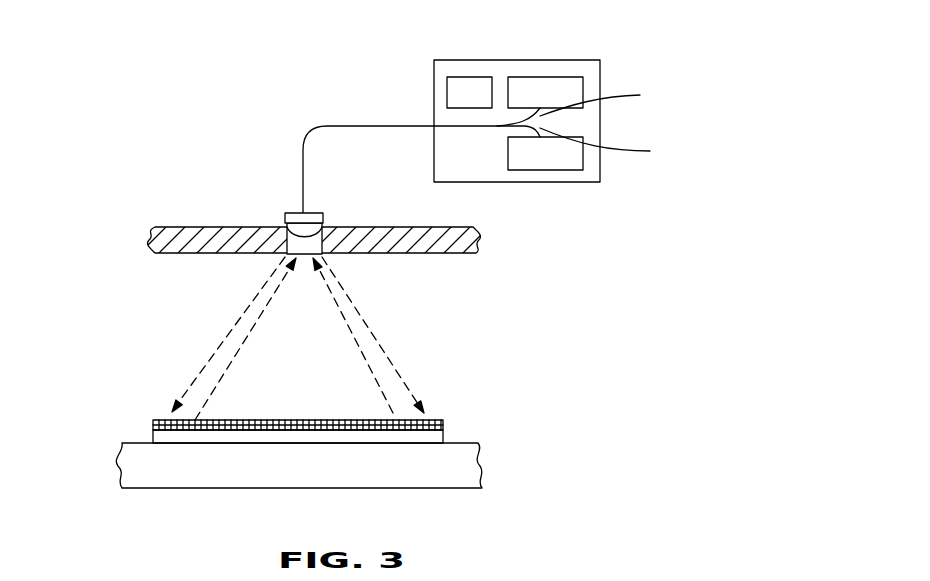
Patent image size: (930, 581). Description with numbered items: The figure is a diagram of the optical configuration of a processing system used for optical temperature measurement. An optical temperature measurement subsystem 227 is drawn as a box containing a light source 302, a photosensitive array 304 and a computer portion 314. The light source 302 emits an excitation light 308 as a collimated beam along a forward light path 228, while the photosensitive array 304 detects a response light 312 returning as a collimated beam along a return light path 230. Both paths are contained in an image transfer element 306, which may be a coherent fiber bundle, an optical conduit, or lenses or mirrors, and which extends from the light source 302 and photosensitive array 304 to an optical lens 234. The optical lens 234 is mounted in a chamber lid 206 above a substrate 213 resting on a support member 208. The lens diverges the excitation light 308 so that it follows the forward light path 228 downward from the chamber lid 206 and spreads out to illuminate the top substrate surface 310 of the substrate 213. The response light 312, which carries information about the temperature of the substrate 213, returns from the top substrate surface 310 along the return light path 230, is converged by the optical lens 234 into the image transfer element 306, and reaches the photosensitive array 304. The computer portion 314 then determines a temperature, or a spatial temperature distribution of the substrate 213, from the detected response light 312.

The optical temperature measurement subsystem 227 is at (525, 60).
The computer portion 314 is at (453, 103).
The photosensitive array 304 is at (529, 103).
The light source 302 is at (529, 164).
The return light path 230 is at (607, 98).
The forward light path 228 is at (612, 144).
The image transfer element 306 is at (327, 124).
The optical lens 234 is at (286, 237).
The chamber lid 206 is at (180, 227).
The excitation light 308 is at (217, 357).
The response light 312 is at (256, 322).
The substrate 213 is at (443, 437).
The top substrate surface 310 is at (243, 420).
The support member 208 is at (468, 460).